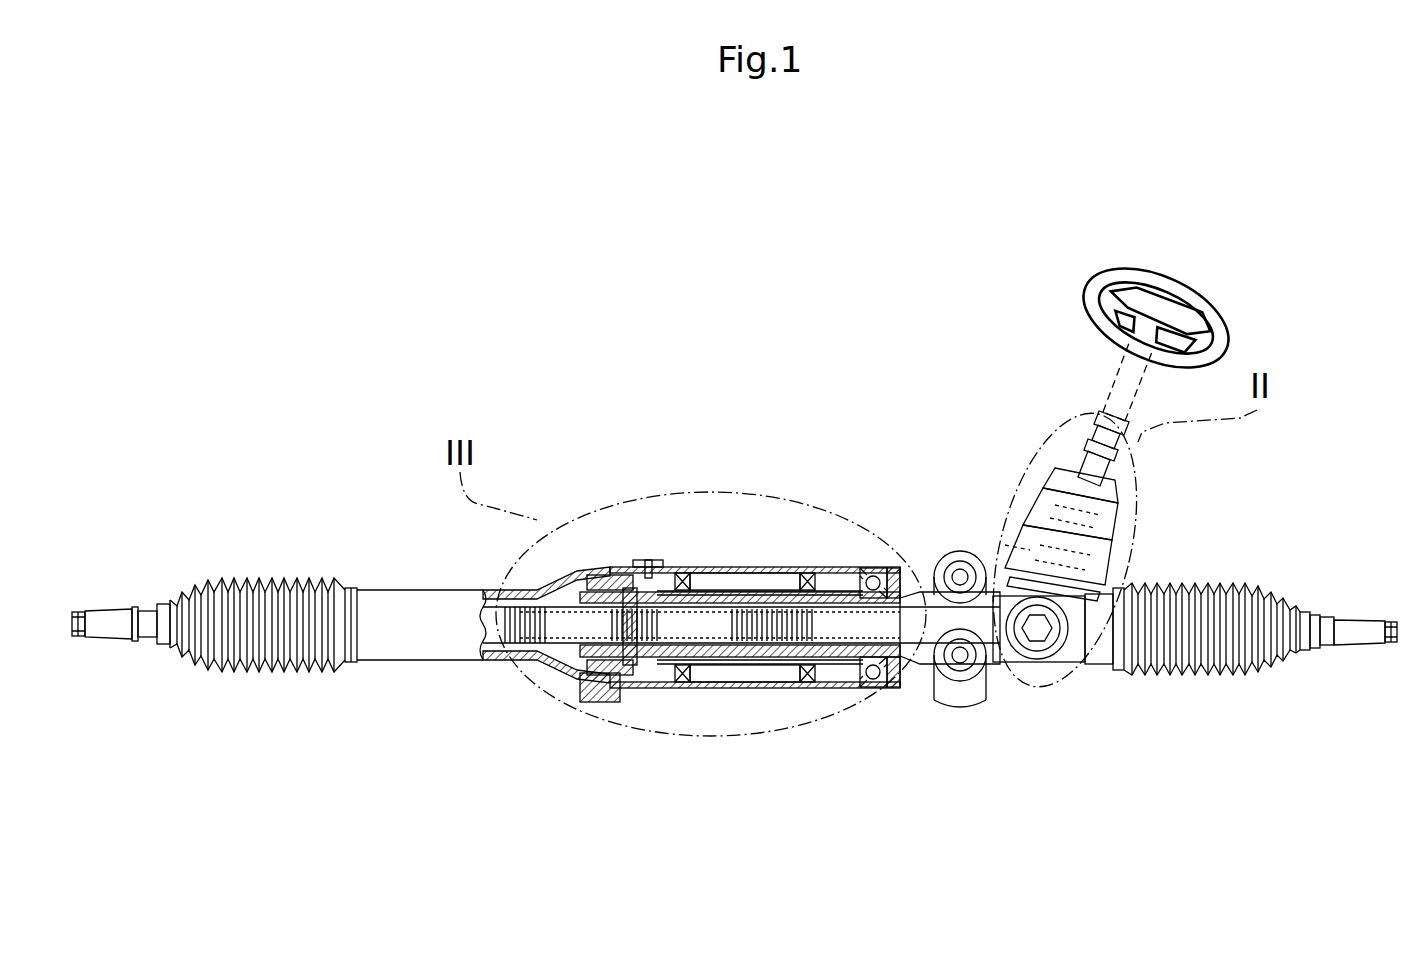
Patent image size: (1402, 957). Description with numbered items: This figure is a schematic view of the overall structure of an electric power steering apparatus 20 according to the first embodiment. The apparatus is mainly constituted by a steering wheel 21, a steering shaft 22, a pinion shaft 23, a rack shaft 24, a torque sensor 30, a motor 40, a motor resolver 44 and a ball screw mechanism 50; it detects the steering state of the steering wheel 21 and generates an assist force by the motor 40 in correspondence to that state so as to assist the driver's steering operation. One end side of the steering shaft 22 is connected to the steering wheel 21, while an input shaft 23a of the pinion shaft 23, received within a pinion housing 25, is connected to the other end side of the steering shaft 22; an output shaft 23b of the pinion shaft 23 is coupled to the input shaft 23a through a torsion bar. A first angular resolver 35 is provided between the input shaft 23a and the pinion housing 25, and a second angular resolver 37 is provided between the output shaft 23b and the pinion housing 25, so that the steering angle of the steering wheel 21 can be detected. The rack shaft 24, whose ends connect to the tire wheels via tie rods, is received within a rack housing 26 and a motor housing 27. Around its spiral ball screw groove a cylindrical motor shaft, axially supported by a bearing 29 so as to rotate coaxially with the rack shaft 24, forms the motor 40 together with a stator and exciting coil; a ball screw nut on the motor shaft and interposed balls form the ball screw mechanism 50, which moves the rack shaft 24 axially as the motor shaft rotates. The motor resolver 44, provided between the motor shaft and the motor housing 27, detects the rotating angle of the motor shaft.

The electric power steering apparatus 20 is at (317, 242).
The steering wheel 21 is at (1215, 308).
The steering shaft 22 is at (1110, 385).
The pinion shaft 23 is at (1130, 453).
The input shaft 23a is at (1040, 470).
The output shaft 23b is at (1010, 538).
The rack shaft 24 is at (492, 664).
The pinion housing 25 is at (1000, 560).
The rack housing 26 is at (500, 585).
The motor housing 27 is at (762, 567).
The bearing 29 is at (847, 565).
The torque sensor 30 is at (1226, 482).
The first angular resolver 35 is at (1148, 505).
The second angular resolver 37 is at (1148, 545).
The motor 40 is at (701, 564).
The motor resolver 44 is at (835, 690).
The ball screw mechanism 50 is at (591, 566).